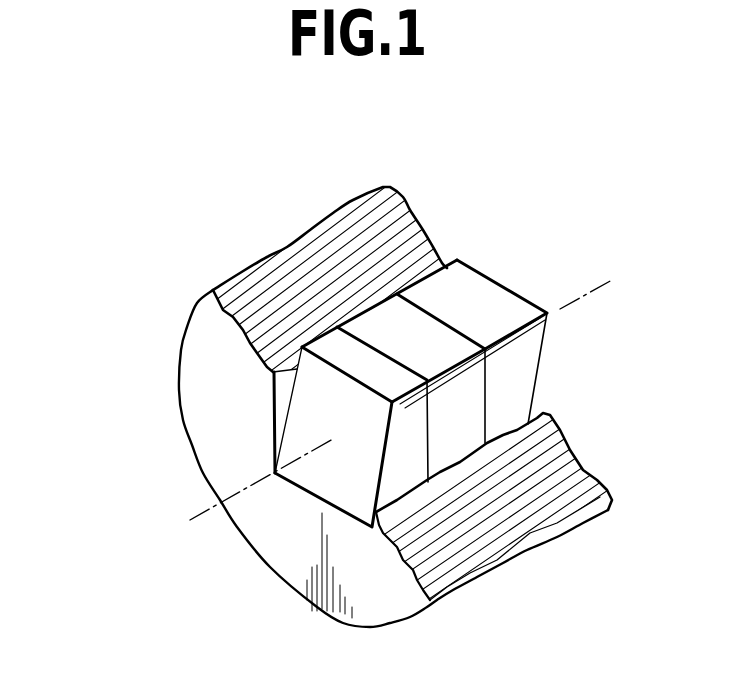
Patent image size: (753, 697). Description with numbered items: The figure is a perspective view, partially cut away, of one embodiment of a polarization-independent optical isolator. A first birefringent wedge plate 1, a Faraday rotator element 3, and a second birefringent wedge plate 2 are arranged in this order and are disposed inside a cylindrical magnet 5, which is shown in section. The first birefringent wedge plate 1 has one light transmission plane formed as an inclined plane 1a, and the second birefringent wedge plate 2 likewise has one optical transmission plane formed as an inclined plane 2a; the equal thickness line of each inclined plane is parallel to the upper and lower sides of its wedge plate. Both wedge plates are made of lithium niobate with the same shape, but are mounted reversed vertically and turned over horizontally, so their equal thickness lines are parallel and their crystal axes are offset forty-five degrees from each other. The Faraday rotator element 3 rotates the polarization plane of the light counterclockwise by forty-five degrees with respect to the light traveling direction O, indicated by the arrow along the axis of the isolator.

The first birefringent wedge plate 1 is at (320, 403).
The inclined plane 1a is at (336, 457).
The second birefringent wedge plate 2 is at (529, 302).
The inclined plane 2a is at (533, 378).
The Faraday rotator element 3 is at (348, 353).
The cylindrical magnet 5 is at (203, 350).
The light traveling direction O is at (253, 493).